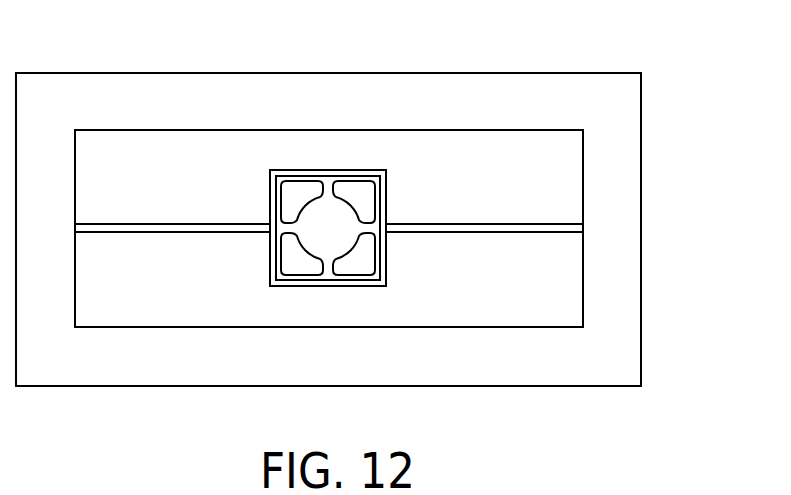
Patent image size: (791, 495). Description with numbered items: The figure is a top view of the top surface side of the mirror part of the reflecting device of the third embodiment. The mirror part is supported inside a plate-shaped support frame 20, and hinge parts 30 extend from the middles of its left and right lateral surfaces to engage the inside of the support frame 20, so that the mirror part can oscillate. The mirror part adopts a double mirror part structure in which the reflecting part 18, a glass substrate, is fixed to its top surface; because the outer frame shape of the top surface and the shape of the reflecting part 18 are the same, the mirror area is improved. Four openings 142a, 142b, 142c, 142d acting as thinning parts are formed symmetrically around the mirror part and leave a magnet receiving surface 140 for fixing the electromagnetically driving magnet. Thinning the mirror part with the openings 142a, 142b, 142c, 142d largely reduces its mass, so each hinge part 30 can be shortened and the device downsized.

The reflecting part 18 is at (328, 228).
The support frame 20 is at (527, 368).
The hinge part 30 is at (490, 224).
The magnet receiving surface 140 is at (299, 243).
The opening 142a is at (360, 267).
The opening 142b is at (303, 267).
The opening 142c is at (368, 198).
The opening 142d is at (295, 188).